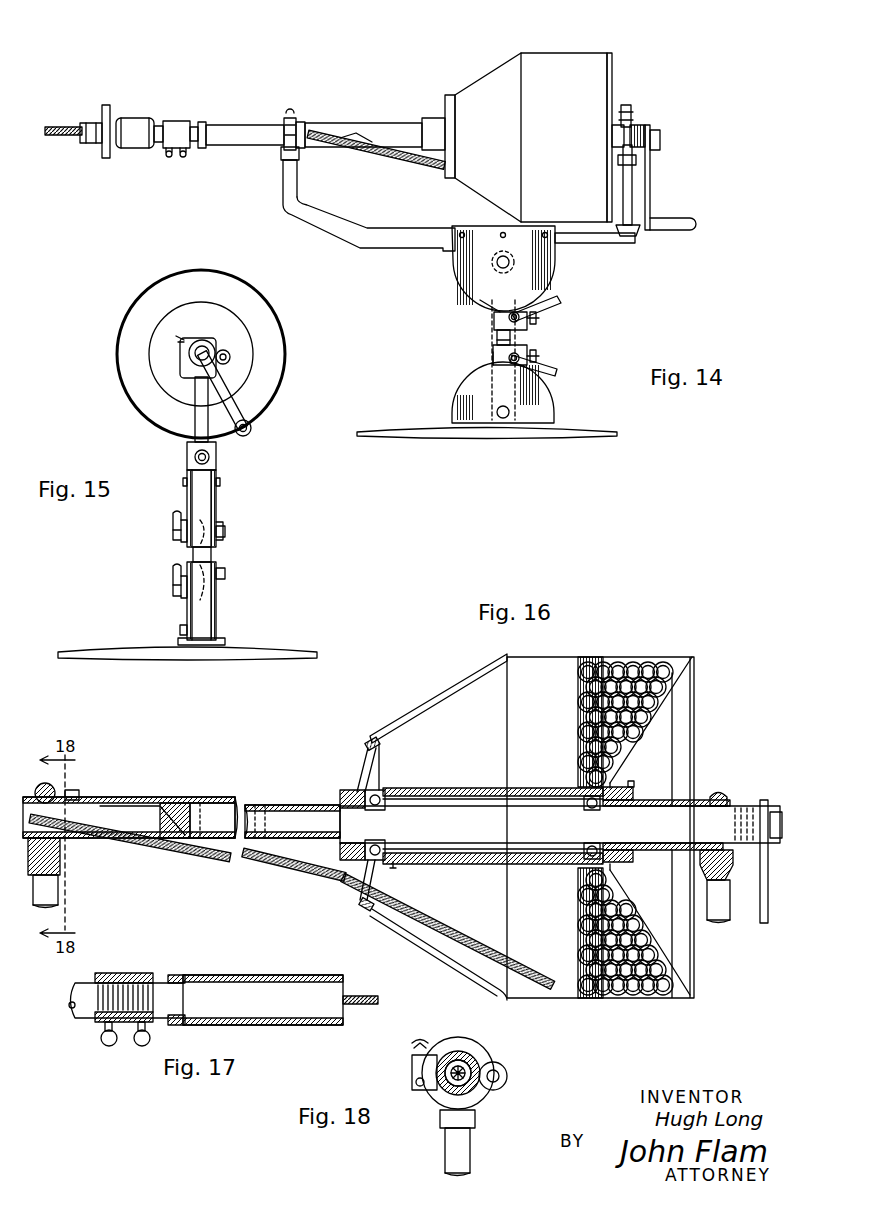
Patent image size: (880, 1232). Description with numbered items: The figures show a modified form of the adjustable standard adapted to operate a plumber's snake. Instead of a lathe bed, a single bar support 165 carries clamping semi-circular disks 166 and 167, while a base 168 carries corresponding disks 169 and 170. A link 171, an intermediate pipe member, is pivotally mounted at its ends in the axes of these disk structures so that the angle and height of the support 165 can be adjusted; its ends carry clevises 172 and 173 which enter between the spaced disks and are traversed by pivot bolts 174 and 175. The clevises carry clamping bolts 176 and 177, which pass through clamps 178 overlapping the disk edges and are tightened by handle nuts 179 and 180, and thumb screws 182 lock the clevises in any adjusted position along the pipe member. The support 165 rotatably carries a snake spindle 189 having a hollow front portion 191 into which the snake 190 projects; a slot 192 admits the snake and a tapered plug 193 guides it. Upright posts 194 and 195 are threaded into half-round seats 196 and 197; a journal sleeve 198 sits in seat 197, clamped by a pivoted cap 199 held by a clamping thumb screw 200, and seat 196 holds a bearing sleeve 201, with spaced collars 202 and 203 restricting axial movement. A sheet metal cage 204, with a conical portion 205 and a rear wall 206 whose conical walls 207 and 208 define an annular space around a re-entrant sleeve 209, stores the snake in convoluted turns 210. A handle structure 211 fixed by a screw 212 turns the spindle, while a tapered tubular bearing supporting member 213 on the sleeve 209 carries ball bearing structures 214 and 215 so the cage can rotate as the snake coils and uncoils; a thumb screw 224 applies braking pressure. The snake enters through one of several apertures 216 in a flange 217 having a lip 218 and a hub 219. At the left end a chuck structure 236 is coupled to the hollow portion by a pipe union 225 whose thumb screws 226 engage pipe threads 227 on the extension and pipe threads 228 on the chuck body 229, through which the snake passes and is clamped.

In FIG. 14, the bar support 165 is at (405, 240).
In FIG. 15, the bar support 165 is at (221, 444).
In FIG. 14, the clamping semi-circular disk 166 is at (468, 283).
In FIG. 15, the clamping semi-circular disk 166 is at (190, 500).
In FIG. 15, the clamping semi-circular disk 167 is at (217, 495).
In FIG. 14, the base 168 is at (570, 430).
In FIG. 15, the base 168 is at (262, 650).
In FIG. 14, the clamping disk 169 is at (538, 397).
In FIG. 15, the clamping disk 169 is at (186, 605).
In FIG. 15, the clamping disk 170 is at (208, 600).
In FIG. 14, the link 171 is at (497, 338).
In FIG. 15, the link 171 is at (212, 552).
In FIG. 14, the clevis 172 is at (503, 290).
In FIG. 15, the clevis 172 is at (205, 512).
In FIG. 14, the clevis 173 is at (495, 362).
In FIG. 15, the clevis 173 is at (218, 582).
In FIG. 14, the pivot bolt 174 is at (495, 263).
In FIG. 15, the pivot bolt 174 is at (188, 470).
In FIG. 14, the pivot bolt 175 is at (495, 412).
In FIG. 15, the pivot bolt 175 is at (180, 630).
In FIG. 14, the clamping bolt 176 is at (494, 320).
In FIG. 15, the clamping bolt 176 is at (226, 530).
In FIG. 14, the clamping bolt 177 is at (493, 355).
In FIG. 15, the clamping bolt 177 is at (227, 573).
In FIG. 14, the clamp 178 is at (515, 340).
In FIG. 15, the clamp 178 is at (220, 535).
In FIG. 14, the handle nut 179 is at (556, 299).
In FIG. 15, the handle nut 179 is at (172, 527).
In FIG. 14, the handle nut 180 is at (560, 373).
In FIG. 15, the handle nut 180 is at (172, 585).
In FIG. 14, the thumb screw 182 is at (538, 318).
In FIG. 15, the thumb screw 182 is at (182, 520).
In FIG. 14, the snake spindle 189 is at (347, 123).
In FIG. 16, the snake spindle 189 is at (308, 808).
In FIG. 14, the snake 190 is at (70, 136).
In FIG. 16, the snake 190 is at (192, 852).
In FIG. 17, the snake 190 is at (368, 1010).
In FIG. 18, the snake 190 is at (454, 1081).
In FIG. 16, the hollow front portion 191 is at (197, 805).
In FIG. 17, the hollow front portion 191 is at (208, 997).
In FIG. 18, the hollow front portion 191 is at (472, 1066).
In FIG. 14, the slot 192 is at (356, 134).
In FIG. 16, the slot 192 is at (165, 818).
In FIG. 16, the tapered plug 193 is at (183, 803).
In FIG. 14, the upright post 194 is at (285, 185).
In FIG. 16, the upright post 194 is at (58, 893).
In FIG. 18, the upright post 194 is at (466, 1150).
In FIG. 14, the upright post 195 is at (628, 185).
In FIG. 15, the upright post 195 is at (196, 412).
In FIG. 16, the upright post 195 is at (724, 902).
In FIG. 14, the half-round seat 196 is at (282, 153).
In FIG. 16, the half-round seat 196 is at (58, 855).
In FIG. 18, the half-round seat 196 is at (487, 1093).
In FIG. 14, the half-round seat 197 is at (645, 142).
In FIG. 15, the half-round seat 197 is at (228, 360).
In FIG. 16, the half-round seat 197 is at (735, 858).
In FIG. 16, the journal sleeve 198 is at (694, 800).
In FIG. 14, the cap 199 is at (628, 122).
In FIG. 15, the cap 199 is at (215, 345).
In FIG. 16, the cap 199 is at (724, 797).
In FIG. 14, the clamping thumb screw 200 is at (635, 125).
In FIG. 14, the bearing sleeve 201 is at (237, 125).
In FIG. 16, the bearing sleeve 201 is at (58, 797).
In FIG. 17, the bearing sleeve 201 is at (250, 976).
In FIG. 18, the bearing sleeve 201 is at (458, 1052).
In FIG. 14, the collar 202 is at (203, 122).
In FIG. 17, the collar 202 is at (172, 977).
In FIG. 14, the collar 203 is at (297, 119).
In FIG. 16, the collar 203 is at (80, 798).
In FIG. 14, the snake cage 204 is at (556, 62).
In FIG. 15, the snake cage 204 is at (117, 350).
In FIG. 16, the snake cage 204 is at (548, 660).
In FIG. 14, the conical portion 205 is at (486, 77).
In FIG. 16, the conical portion 205 is at (470, 692).
In FIG. 16, the rear wall 206 is at (692, 722).
In FIG. 16, the conical wall 207 is at (695, 684).
In FIG. 16, the conical wall 208 is at (655, 745).
In FIG. 16, the re-entrant sleeve 209 is at (462, 788).
In FIG. 16, the convoluted turns 210 is at (642, 672).
In FIG. 14, the handle structure 211 is at (652, 200).
In FIG. 16, the handle structure 211 is at (764, 805).
In FIG. 14, the screw 212 is at (662, 136).
In FIG. 16, the screw 212 is at (782, 820).
In FIG. 16, the tubular bearing supporting member 213 is at (495, 864).
In FIG. 16, the ball bearing structure 214 is at (385, 788).
In FIG. 16, the ball bearing structure 215 is at (576, 866).
In FIG. 16, the aperture 216 is at (368, 912).
In FIG. 16, the flange 217 is at (362, 760).
In FIG. 16, the lip 218 is at (395, 728).
In FIG. 16, the hub 219 is at (352, 790).
In FIG. 16, the thumb screw 224 is at (635, 782).
In FIG. 14, the pipe union 225 is at (170, 120).
In FIG. 17, the pipe union 225 is at (113, 975).
In FIG. 17, the thumb screw 226 is at (141, 1047).
In FIG. 17, the pipe threads 227 is at (140, 990).
In FIG. 17, the pipe threads 228 is at (100, 996).
In FIG. 14, the body 229 is at (135, 148).
In FIG. 14, the chuck structure 236 is at (110, 98).